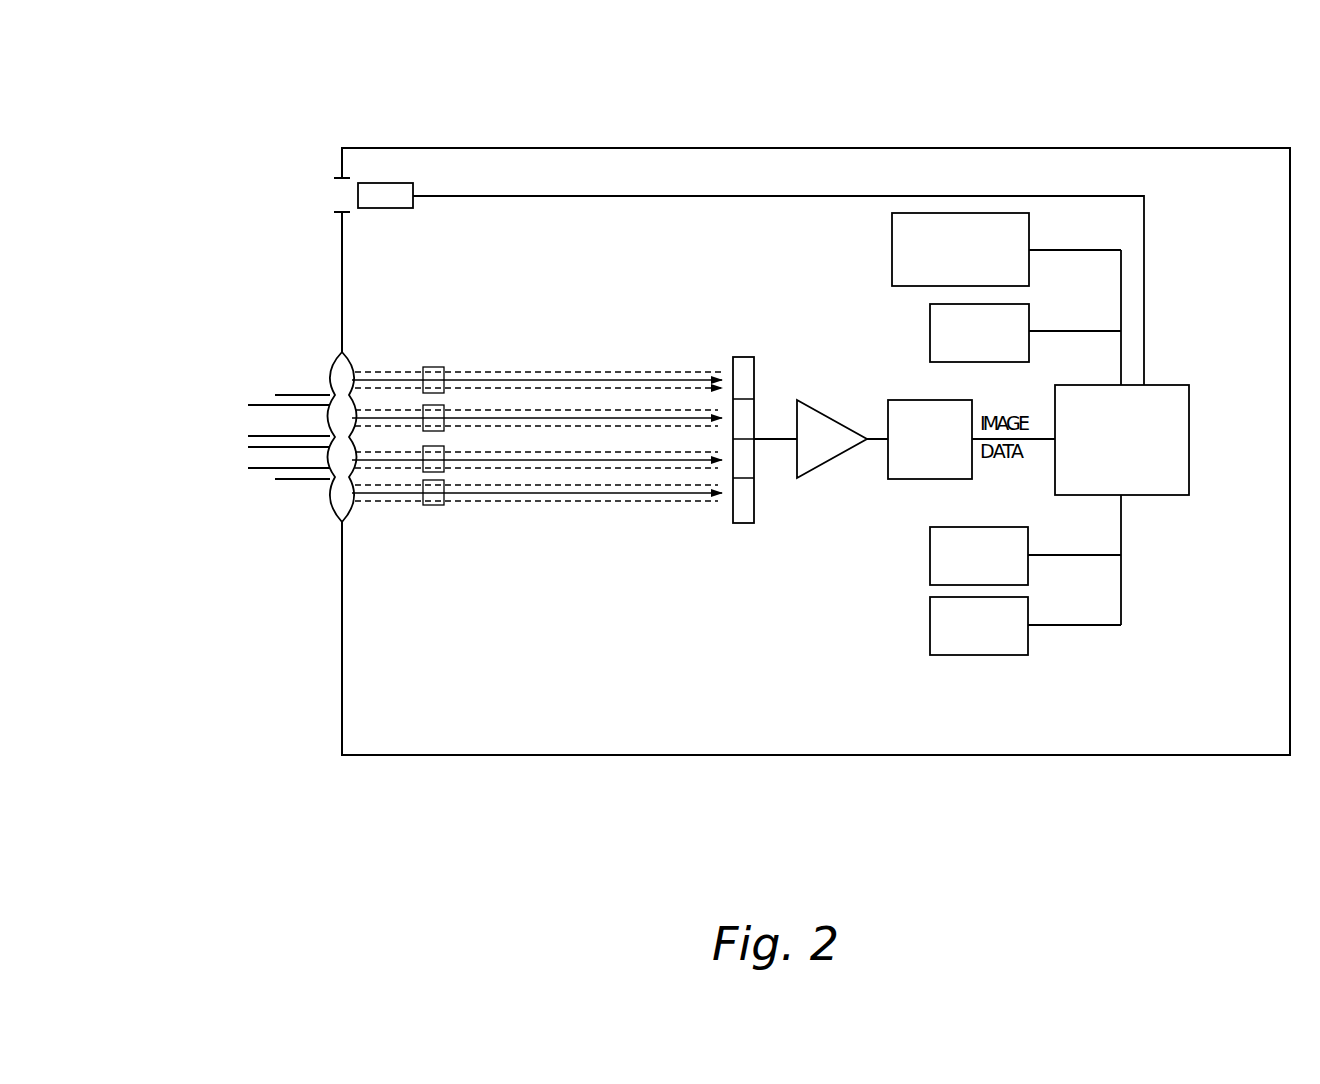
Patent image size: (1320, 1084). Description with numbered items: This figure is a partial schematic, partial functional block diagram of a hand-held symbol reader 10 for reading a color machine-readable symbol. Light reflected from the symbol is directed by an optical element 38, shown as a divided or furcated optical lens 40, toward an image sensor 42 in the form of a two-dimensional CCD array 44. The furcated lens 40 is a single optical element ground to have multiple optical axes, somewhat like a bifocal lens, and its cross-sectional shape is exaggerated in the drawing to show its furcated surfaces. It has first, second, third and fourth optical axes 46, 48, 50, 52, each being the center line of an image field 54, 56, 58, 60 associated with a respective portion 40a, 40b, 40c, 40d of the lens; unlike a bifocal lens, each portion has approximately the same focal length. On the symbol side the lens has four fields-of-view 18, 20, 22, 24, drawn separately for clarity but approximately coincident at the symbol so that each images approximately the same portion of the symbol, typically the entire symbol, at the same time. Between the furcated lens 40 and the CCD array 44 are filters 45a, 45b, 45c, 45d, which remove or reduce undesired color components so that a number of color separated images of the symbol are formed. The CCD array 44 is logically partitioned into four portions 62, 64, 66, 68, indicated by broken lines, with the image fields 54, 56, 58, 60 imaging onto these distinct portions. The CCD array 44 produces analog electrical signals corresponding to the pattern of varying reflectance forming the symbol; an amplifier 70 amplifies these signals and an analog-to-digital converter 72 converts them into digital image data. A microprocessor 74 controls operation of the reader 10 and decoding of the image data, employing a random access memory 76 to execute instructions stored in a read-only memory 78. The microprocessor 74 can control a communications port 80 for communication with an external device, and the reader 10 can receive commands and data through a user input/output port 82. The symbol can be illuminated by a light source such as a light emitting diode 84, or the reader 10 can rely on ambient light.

The hand-held symbol reader 10 is at (708, 790).
The first field-of-view 18 is at (332, 358).
The second field-of-view 20 is at (260, 405).
The third field-of-view 22 is at (262, 468).
The fourth field-of-view 24 is at (318, 518).
The optical element 38 is at (336, 352).
The furcated optical lens 40 is at (261, 404).
The first portion of furcated lens 40a is at (330, 378).
The second portion of furcated lens 40b is at (332, 415).
The third portion of furcated lens 40c is at (332, 455).
The fourth portion of furcated lens 40d is at (332, 510).
The image sensor 42 is at (735, 536).
The two-dimensional CCD array 44 is at (755, 373).
The first filter 45a is at (423, 382).
The second filter 45b is at (423, 412).
The third filter 45c is at (423, 455).
The fourth filter 45d is at (423, 503).
The first optical axis 46 is at (543, 380).
The second optical axis 48 is at (592, 418).
The third optical axis 50 is at (608, 460).
The fourth optical axis 52 is at (653, 492).
The first image field 54 is at (476, 390).
The second image field 56 is at (493, 412).
The third image field 58 is at (458, 452).
The fourth image field 60 is at (525, 483).
The first portion of CCD array 62 is at (755, 388).
The second portion of CCD array 64 is at (755, 417).
The third portion of CCD array 66 is at (755, 458).
The fourth portion of CCD array 68 is at (755, 505).
The amplifier 70 is at (817, 478).
The analog-to-digital converter 72 is at (917, 479).
The microprocessor 74 is at (1189, 442).
The random access memory 76 is at (892, 252).
The read-only memory 78 is at (929, 337).
The communications port 80 is at (930, 623).
The user input/output port 82 is at (930, 553).
The light emitting diode 84 is at (390, 183).